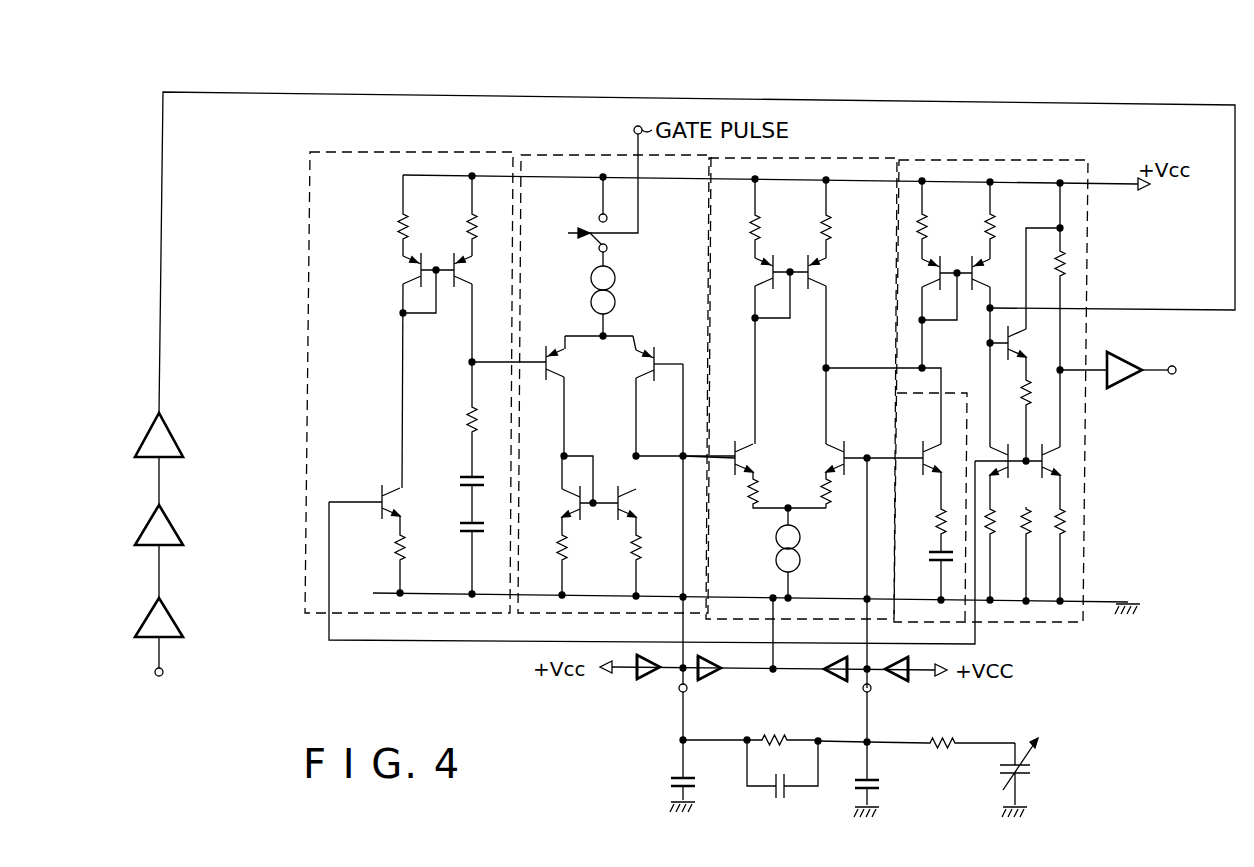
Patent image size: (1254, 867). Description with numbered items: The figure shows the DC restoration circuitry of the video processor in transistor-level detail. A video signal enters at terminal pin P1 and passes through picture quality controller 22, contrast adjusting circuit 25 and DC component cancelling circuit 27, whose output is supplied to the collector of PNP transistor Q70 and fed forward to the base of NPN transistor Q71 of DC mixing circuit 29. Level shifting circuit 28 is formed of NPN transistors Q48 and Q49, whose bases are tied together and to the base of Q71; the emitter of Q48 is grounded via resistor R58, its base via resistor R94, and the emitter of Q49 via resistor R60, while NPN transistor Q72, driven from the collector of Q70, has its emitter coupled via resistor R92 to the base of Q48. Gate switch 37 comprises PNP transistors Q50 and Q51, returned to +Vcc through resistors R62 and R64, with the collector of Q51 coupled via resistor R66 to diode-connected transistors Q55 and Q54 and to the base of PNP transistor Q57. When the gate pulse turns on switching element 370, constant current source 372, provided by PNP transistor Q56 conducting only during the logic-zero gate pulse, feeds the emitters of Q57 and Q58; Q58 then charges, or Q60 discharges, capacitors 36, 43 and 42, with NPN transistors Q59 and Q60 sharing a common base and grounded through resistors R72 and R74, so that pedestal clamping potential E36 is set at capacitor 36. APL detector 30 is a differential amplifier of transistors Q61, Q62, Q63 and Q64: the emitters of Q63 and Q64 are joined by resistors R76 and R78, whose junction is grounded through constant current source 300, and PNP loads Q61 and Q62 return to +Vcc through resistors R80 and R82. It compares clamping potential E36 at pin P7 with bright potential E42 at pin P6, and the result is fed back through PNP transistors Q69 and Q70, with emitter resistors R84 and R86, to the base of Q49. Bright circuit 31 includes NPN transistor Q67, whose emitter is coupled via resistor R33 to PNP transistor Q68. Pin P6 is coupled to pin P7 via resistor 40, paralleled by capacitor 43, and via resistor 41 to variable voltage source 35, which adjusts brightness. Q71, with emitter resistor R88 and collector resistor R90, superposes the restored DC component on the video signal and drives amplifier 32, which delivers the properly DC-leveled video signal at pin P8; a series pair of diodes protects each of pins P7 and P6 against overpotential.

The picture quality controller 22 is at (177, 630).
The contrast adjusting circuit 25 is at (178, 540).
The DC component cancelling circuit 27 is at (175, 442).
The level shifting circuit 28 is at (402, 152).
The DC mixing circuit 29 is at (1049, 162).
The APL detector 30 is at (864, 160).
The bright circuit 31 is at (930, 626).
The amplifier 32 is at (1136, 368).
The variable voltage source 35 is at (1040, 770).
The capacitor 36 is at (668, 788).
The gate switch 37 is at (558, 158).
The resistor 40 is at (772, 734).
The resistor 41 is at (942, 738).
The capacitor 42 is at (881, 794).
The capacitor 43 is at (782, 802).
The constant current source 300 is at (802, 552).
The switching element 370 is at (596, 222).
The constant current source 372 is at (588, 299).
The input terminal P1 is at (174, 672).
The pin P6 is at (864, 692).
The pin P7 is at (678, 692).
The pin P8 is at (1173, 383).
The pedestal clamping potential E36 is at (678, 744).
The bright potential E42 is at (871, 744).
The NPN transistor Q48 is at (1032, 434).
The NPN transistor Q49 is at (400, 502).
The PNP transistor Q50 is at (407, 269).
The PNP transistor Q51 is at (461, 290).
The PNP transistor Q54 is at (469, 540).
The NPN transistor Q55 is at (468, 477).
The PNP transistor Q56 is at (616, 312).
The PNP transistor Q57 is at (558, 368).
The PNP transistor Q58 is at (654, 348).
The NPN transistor Q59 is at (570, 503).
The NPN transistor Q60 is at (624, 500).
The PNP transistor Q61 is at (778, 290).
The PNP transistor Q62 is at (813, 268).
The NPN transistor Q63 is at (746, 450).
The NPN transistor Q64 is at (840, 444).
The NPN transistor Q67 is at (925, 448).
The PNP transistor Q68 is at (932, 564).
The PNP transistor Q69 is at (932, 280).
The PNP transistor Q70 is at (977, 296).
The NPN transistor Q71 is at (1048, 465).
The NPN transistor Q72 is at (1036, 340).
The resistor R33 is at (938, 524).
The resistor R58 is at (1004, 534).
The resistor R60 is at (394, 556).
The resistor R62 is at (402, 227).
The resistor R64 is at (467, 226).
The resistor R66 is at (468, 428).
The resistor R72 is at (566, 556).
The resistor R74 is at (634, 562).
The resistor R76 is at (748, 500).
The resistor R78 is at (820, 492).
The resistor R80 is at (764, 232).
The resistor R82 is at (834, 234).
The resistor R84 is at (926, 228).
The resistor R86 is at (996, 226).
The resistor R88 is at (1062, 518).
The resistor R90 is at (1074, 256).
The resistor R92 is at (1034, 400).
The resistor R94 is at (1032, 521).